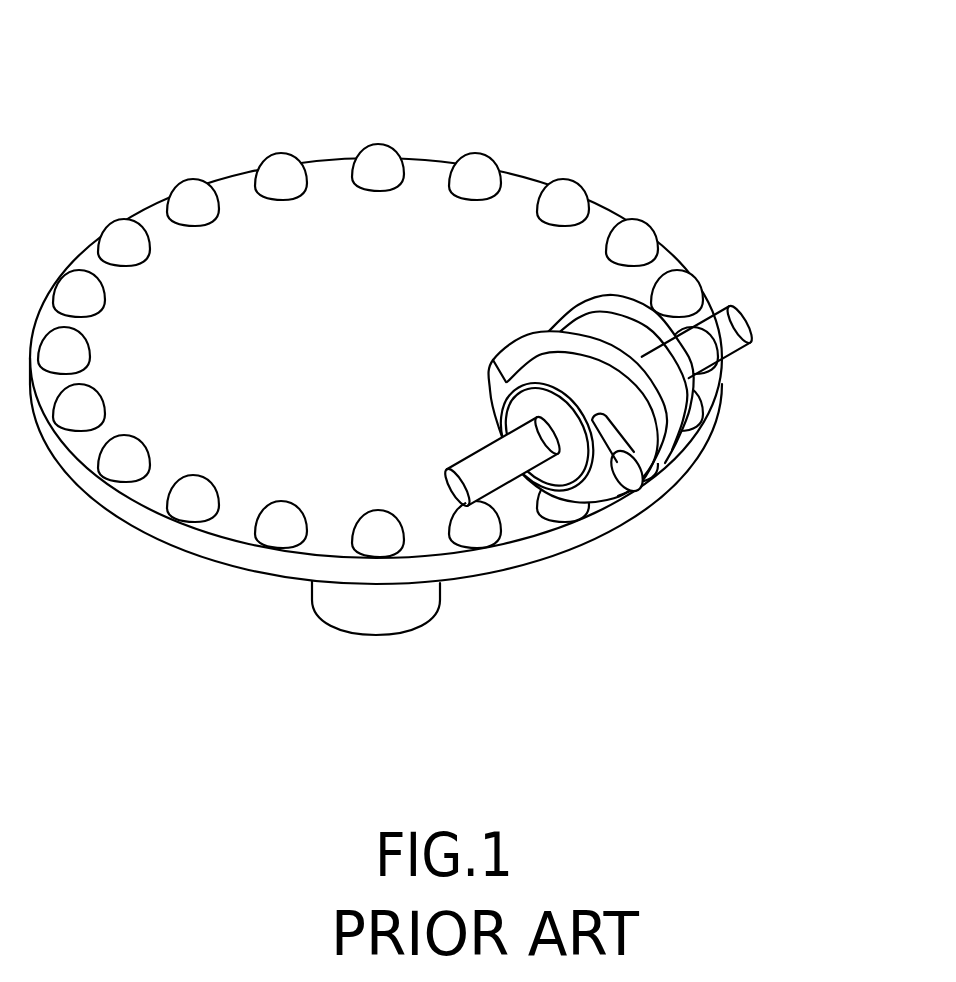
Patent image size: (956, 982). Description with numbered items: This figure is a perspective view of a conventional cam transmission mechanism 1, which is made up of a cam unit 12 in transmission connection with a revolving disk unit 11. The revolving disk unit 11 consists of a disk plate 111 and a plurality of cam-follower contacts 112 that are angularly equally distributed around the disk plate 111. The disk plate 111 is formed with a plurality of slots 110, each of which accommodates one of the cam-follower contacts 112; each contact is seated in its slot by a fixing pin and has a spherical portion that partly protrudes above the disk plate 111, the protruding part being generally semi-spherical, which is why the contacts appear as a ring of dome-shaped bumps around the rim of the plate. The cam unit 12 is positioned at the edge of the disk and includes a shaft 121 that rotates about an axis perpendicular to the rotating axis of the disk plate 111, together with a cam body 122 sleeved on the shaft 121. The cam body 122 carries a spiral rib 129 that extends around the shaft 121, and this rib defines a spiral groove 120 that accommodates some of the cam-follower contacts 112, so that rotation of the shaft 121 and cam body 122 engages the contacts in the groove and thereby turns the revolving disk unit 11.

The cam transmission mechanism 1 is at (477, 328).
The revolving disk unit 11 is at (376, 364).
The slots 110 is at (378, 309).
The disk plate 111 is at (245, 207).
The cam-follower contacts 112 is at (372, 156).
The cam unit 12 is at (667, 424).
The spiral groove 120 is at (618, 332).
The shaft 121 is at (728, 322).
The cam body 122 is at (672, 474).
The spiral rib 129 is at (655, 433).